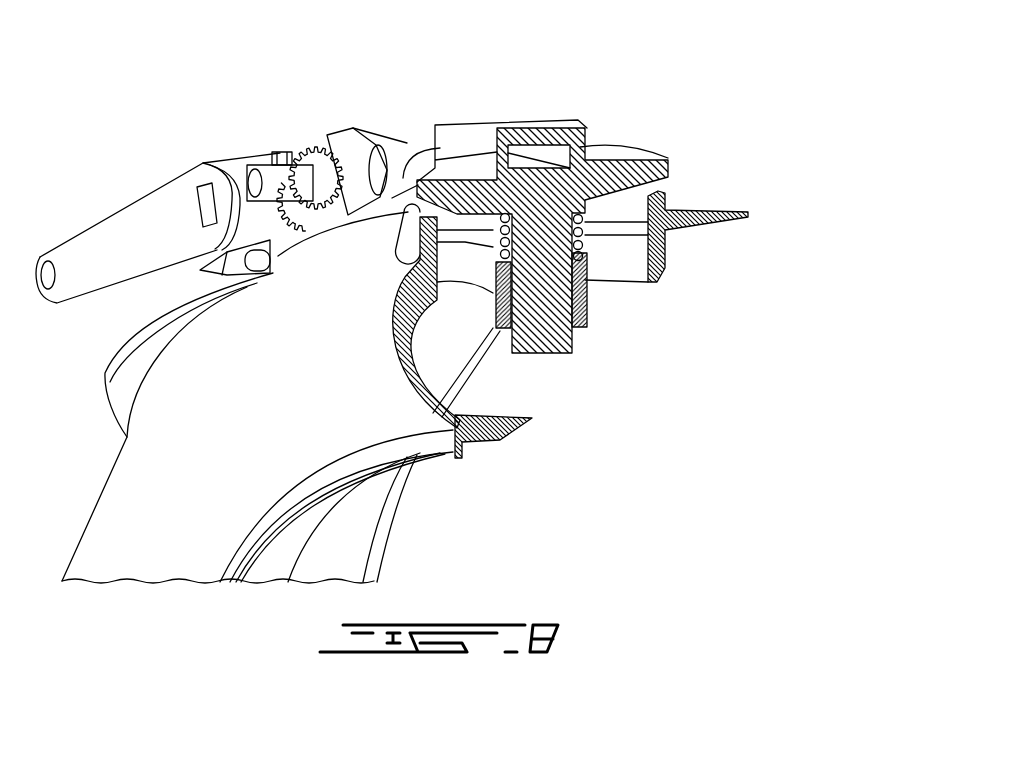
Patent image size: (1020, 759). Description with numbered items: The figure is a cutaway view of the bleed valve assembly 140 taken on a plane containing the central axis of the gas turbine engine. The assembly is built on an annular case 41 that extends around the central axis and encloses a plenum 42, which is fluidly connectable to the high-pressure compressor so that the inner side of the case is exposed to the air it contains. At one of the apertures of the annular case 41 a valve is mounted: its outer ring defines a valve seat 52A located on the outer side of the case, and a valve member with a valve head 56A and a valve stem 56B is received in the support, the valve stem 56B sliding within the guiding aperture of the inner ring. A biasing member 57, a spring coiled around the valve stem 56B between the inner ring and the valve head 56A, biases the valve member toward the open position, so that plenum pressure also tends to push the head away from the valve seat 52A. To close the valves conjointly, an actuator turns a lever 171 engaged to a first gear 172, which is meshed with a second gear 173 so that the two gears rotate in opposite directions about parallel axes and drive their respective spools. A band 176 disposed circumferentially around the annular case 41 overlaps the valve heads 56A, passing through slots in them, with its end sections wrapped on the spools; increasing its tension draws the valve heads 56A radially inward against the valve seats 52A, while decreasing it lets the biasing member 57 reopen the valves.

The annular case 41 is at (192, 535).
The plenum 42 is at (478, 355).
The valve seat 52A is at (665, 230).
The valve head 56A is at (625, 150).
The valve stem 56B is at (553, 365).
The biasing member 57 is at (578, 205).
The bleed valve assembly 140 is at (631, 265).
The lever 171 is at (195, 165).
The first gear 172 is at (313, 135).
The second gear 173 is at (280, 155).
The band 176 is at (520, 150).